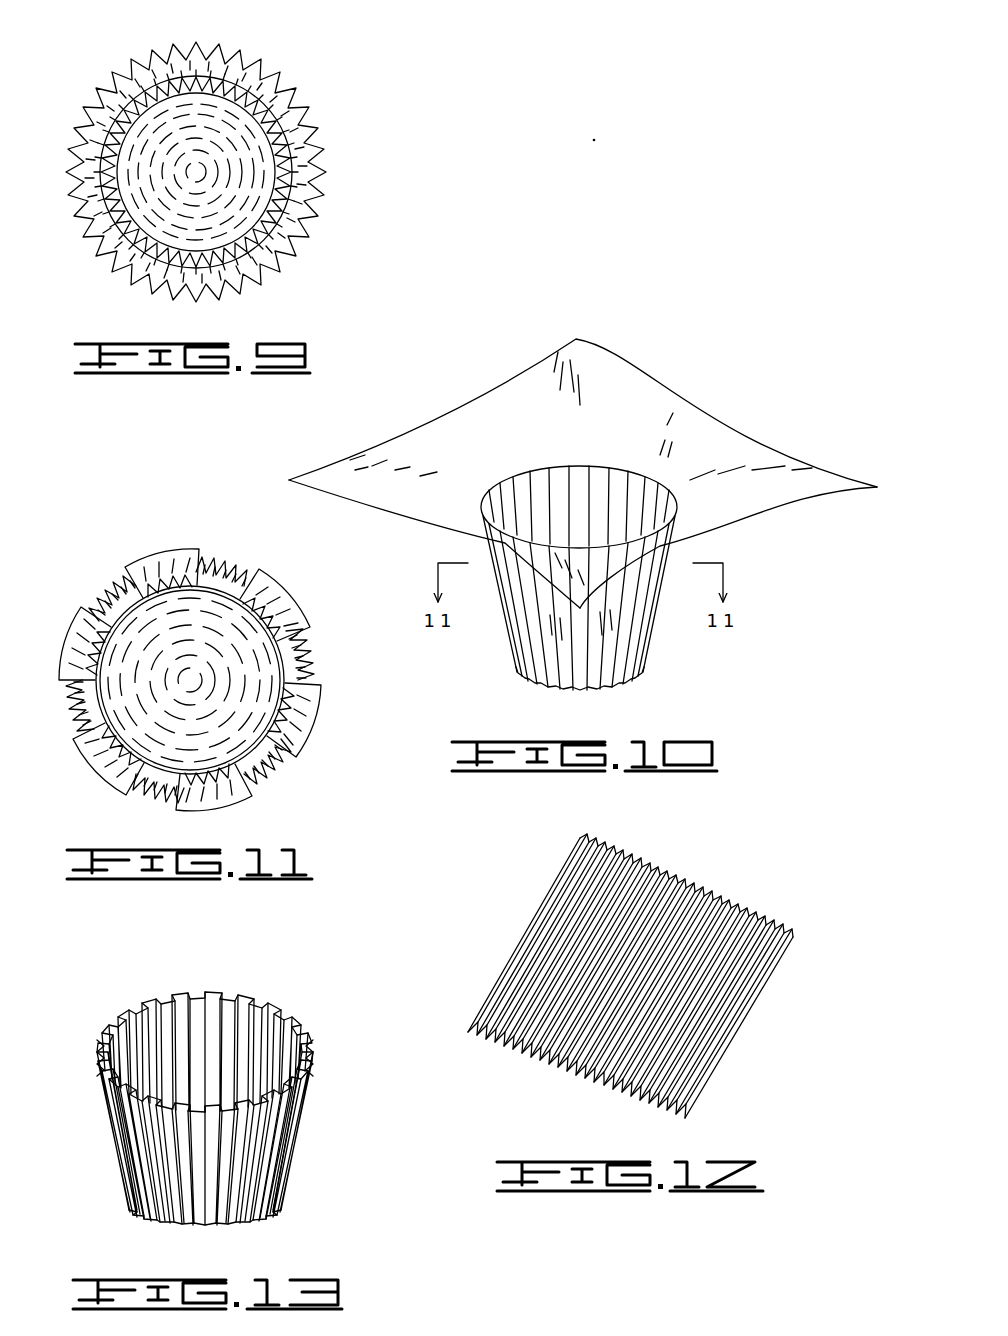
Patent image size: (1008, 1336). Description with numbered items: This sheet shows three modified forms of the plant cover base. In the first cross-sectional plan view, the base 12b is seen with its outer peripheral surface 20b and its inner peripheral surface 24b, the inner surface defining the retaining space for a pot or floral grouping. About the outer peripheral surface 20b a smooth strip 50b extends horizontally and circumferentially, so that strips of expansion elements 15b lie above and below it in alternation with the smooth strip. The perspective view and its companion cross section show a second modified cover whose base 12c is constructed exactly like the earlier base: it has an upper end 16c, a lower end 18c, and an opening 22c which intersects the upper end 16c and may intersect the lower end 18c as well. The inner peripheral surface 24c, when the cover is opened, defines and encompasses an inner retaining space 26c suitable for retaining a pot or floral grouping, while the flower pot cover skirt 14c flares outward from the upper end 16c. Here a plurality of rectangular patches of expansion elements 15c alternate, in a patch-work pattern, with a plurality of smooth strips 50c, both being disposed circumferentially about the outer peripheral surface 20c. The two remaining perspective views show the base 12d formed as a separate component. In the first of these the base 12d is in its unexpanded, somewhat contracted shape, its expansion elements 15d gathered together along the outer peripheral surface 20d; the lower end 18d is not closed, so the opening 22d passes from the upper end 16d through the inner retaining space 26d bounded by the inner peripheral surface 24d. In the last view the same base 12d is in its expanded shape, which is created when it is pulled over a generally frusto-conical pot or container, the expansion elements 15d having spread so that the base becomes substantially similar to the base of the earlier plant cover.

In FIG. 9, the base 12b is at (90, 86).
In FIG. 9, the expansion elements 15b is at (196, 45).
In FIG. 9, the outer peripheral surface 20b is at (68, 170).
In FIG. 9, the inner peripheral surface 24b is at (97, 250).
In FIG. 9, the smooth strip 50b is at (308, 134).
In FIG. 10, the base 12c is at (667, 615).
In FIG. 11, the base 12c is at (137, 558).
In FIG. 10, the skirt 14c is at (720, 420).
In FIG. 10, the expansion elements 15c is at (558, 685).
In FIG. 11, the expansion elements 15c is at (310, 637).
In FIG. 10, the upper end 16c is at (539, 454).
In FIG. 10, the lower end 18c is at (522, 677).
In FIG. 10, the outer peripheral surface 20c is at (510, 605).
In FIG. 11, the outer peripheral surface 20c is at (93, 593).
In FIG. 10, the opening 22c is at (667, 490).
In FIG. 10, the inner peripheral surface 24c is at (602, 486).
In FIG. 11, the inner peripheral surface 24c is at (70, 707).
In FIG. 10, the inner retaining space 26c is at (505, 506).
In FIG. 10, the smooth strips 50c is at (598, 675).
In FIG. 11, the smooth strips 50c is at (303, 708).
In FIG. 12, the base 12d is at (663, 873).
In FIG. 13, the base 12d is at (253, 992).
In FIG. 12, the expansion elements 15d is at (693, 1027).
In FIG. 13, the expansion elements 15d is at (240, 1200).
In FIG. 12, the upper end 16d is at (728, 903).
In FIG. 13, the upper end 16d is at (298, 1017).
In FIG. 12, the lower end 18d is at (540, 1065).
In FIG. 13, the lower end 18d is at (150, 1217).
In FIG. 12, the outer peripheral surface 20d is at (728, 982).
In FIG. 13, the outer peripheral surface 20d is at (290, 1120).
In FIG. 12, the opening 22d is at (480, 1043).
In FIG. 13, the opening 22d is at (153, 1045).
In FIG. 12, the inner peripheral surface 24d is at (660, 1110).
In FIG. 13, the inner peripheral surface 24d is at (280, 1060).
In FIG. 13, the inner retaining space 26d is at (97, 1052).